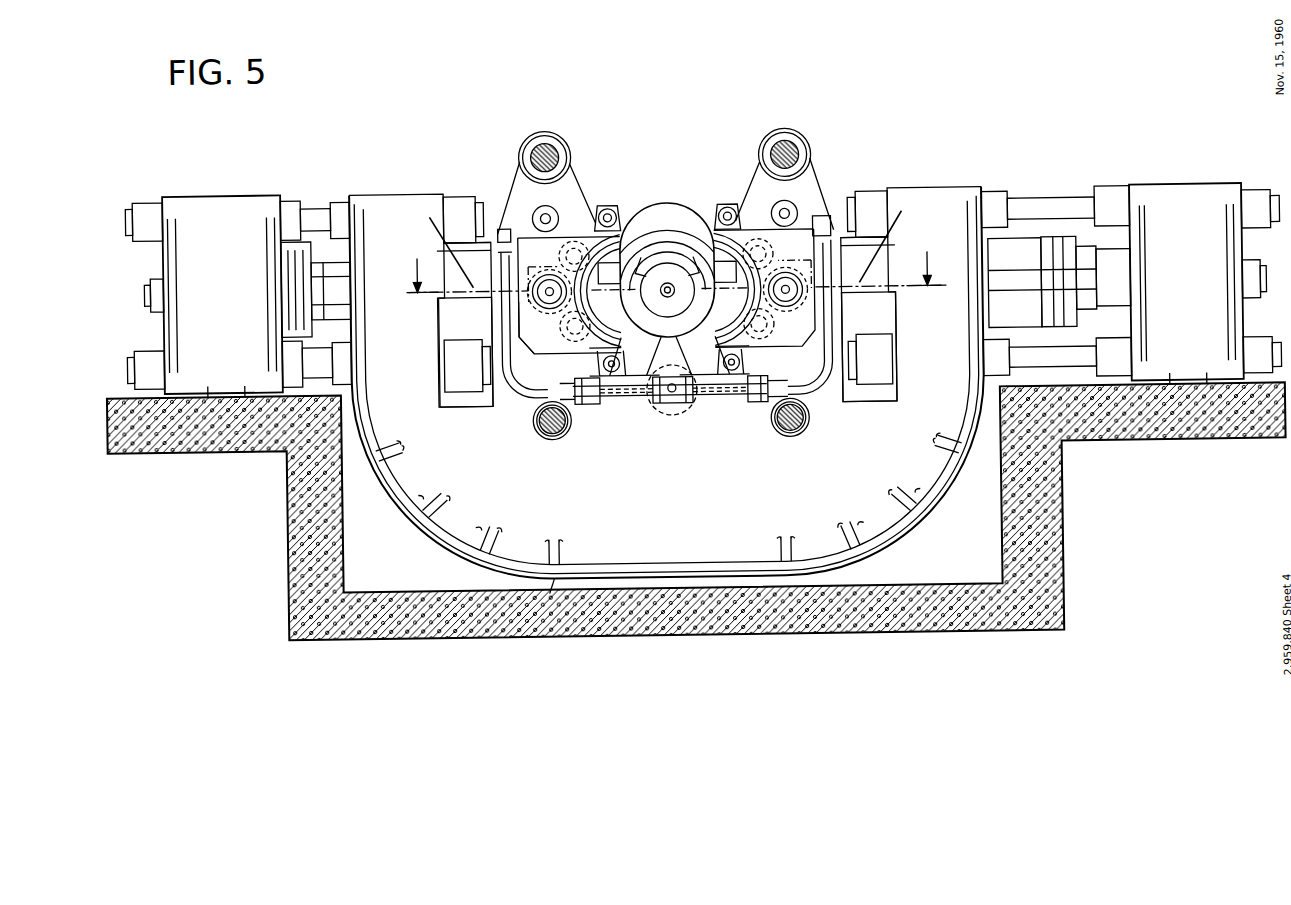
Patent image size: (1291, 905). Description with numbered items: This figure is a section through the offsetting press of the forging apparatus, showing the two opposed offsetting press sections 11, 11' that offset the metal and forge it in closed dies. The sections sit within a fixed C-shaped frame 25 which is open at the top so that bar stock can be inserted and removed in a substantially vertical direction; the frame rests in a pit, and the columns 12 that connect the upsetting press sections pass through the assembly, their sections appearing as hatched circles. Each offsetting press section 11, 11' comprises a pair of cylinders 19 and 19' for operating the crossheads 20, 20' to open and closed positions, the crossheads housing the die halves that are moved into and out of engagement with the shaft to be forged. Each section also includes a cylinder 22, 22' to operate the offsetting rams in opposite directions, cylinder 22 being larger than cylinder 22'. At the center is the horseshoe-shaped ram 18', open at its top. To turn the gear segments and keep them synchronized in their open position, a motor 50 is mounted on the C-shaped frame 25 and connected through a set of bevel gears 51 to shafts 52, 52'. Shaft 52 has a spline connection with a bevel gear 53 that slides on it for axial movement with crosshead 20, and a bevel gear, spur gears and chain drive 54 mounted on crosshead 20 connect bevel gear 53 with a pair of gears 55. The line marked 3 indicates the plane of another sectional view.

The section line 3- 3 is at (676, 284).
The offsetting press section 11 is at (912, 264).
The offsetting press section 11' is at (420, 270).
The columns 12 is at (562, 151).
The ram 18' is at (670, 269).
The cylinder 19 is at (1205, 254).
The cylinder 19' is at (203, 267).
The crosshead 20 is at (789, 262).
The crosshead 20' is at (563, 265).
The cylinder 22 is at (1056, 282).
The cylinder 22' is at (341, 294).
The C-shaped frame 25 is at (683, 535).
The motor 50 is at (682, 417).
The bevel gears 51 is at (658, 408).
The shaft 52 is at (591, 420).
The shaft 52' is at (752, 372).
The bevel gear 53 is at (581, 329).
The bevel gear, spur gears and chain drive 54 is at (536, 320).
The gears 55 is at (584, 244).